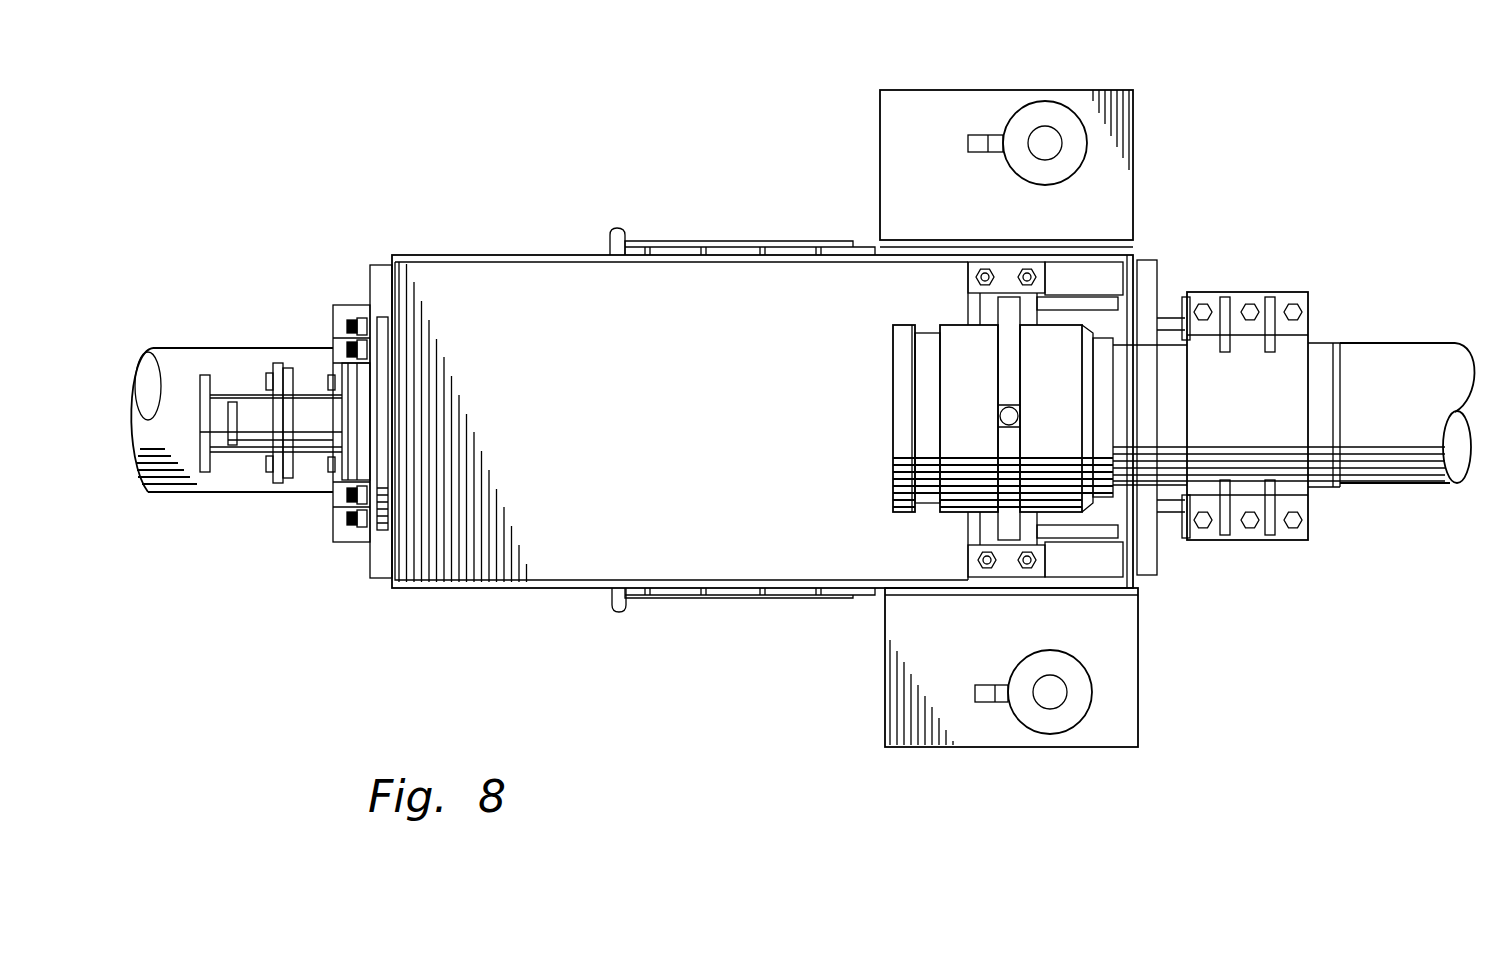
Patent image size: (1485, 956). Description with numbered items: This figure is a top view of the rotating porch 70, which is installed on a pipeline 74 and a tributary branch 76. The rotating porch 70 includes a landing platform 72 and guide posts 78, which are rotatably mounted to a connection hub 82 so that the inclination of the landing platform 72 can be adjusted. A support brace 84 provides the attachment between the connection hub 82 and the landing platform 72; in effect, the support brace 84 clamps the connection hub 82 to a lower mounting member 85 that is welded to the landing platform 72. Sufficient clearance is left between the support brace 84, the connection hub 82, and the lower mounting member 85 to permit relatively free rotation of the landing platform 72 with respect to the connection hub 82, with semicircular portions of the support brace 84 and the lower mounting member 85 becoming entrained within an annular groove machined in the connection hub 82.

The rotating porch 70 is at (728, 136).
The landing platform 72 is at (458, 275).
The pipeline 74 is at (233, 348).
The tributary branch 76 is at (1389, 343).
The guide posts 78 is at (1025, 170).
The connection hub 82 is at (1057, 394).
The support brace 84 is at (1010, 526).
The lower mounting member 85 is at (1077, 278).